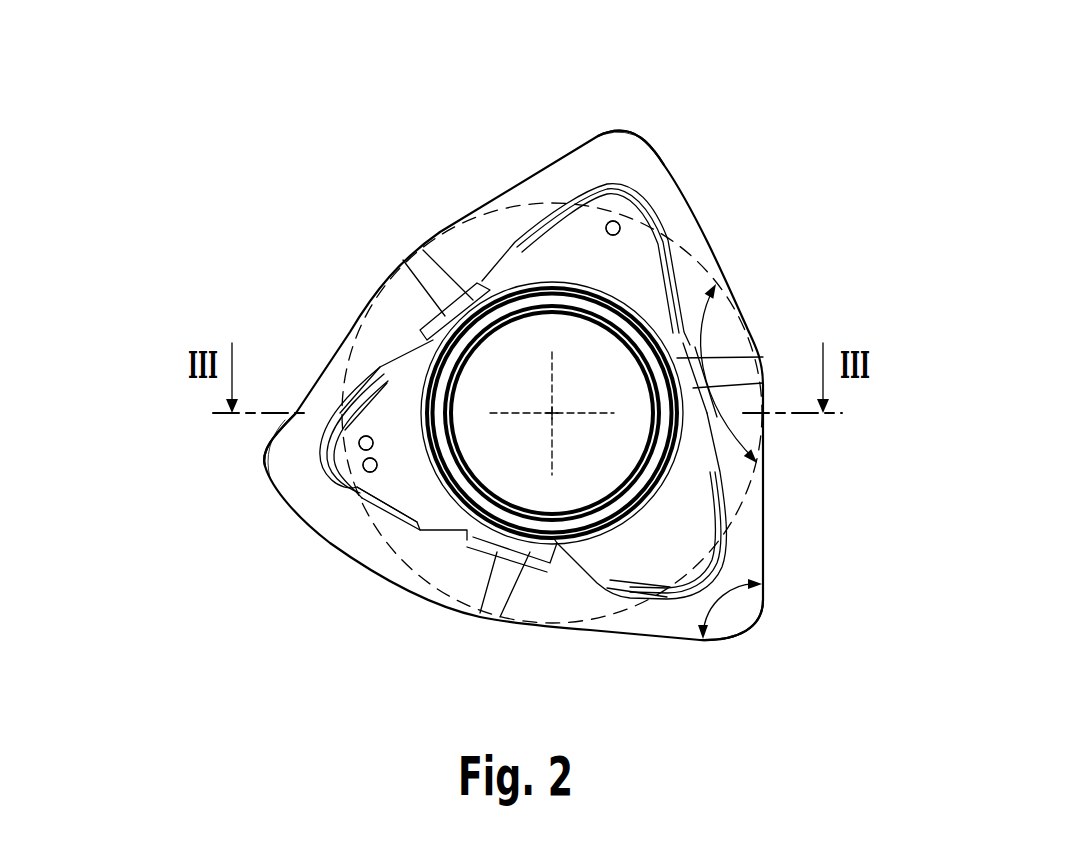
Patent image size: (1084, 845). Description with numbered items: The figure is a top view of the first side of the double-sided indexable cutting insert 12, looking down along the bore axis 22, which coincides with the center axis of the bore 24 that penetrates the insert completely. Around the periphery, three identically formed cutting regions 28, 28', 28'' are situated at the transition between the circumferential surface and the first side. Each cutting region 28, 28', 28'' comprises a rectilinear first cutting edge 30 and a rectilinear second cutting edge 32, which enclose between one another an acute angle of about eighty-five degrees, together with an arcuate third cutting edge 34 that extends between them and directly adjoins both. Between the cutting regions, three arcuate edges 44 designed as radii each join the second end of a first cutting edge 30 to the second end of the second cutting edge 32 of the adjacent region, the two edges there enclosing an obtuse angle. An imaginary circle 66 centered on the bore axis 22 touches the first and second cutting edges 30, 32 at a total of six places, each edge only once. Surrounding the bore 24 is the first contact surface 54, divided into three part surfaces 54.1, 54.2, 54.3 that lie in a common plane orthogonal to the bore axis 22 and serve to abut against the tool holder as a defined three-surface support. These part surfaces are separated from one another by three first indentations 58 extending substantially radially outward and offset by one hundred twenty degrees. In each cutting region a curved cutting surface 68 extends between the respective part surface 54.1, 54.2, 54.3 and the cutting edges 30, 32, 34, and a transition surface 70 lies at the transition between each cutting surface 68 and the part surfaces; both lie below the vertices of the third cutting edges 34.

The cutting insert 12 is at (565, 338).
The bore axis 22 is at (548, 420).
The bore 24 is at (490, 327).
The cutting region 28 is at (731, 688).
The cutting region 28' is at (214, 447).
The cutting region 28'' is at (608, 82).
The first cutting edge 30 is at (503, 193).
The second cutting edge 32 is at (713, 262).
The third cutting edge 34 is at (645, 134).
The arcuate edge 44 is at (763, 370).
The first contact surface 54 is at (489, 346).
The first part surface 54.1 is at (657, 562).
The first part surface 54.2 is at (383, 480).
The first part surface 54.3 is at (623, 245).
The first indentation 58 is at (677, 358).
The imaginary circle 66 is at (743, 500).
The cutting surface 68 is at (645, 170).
The transition surface 70 is at (617, 198).